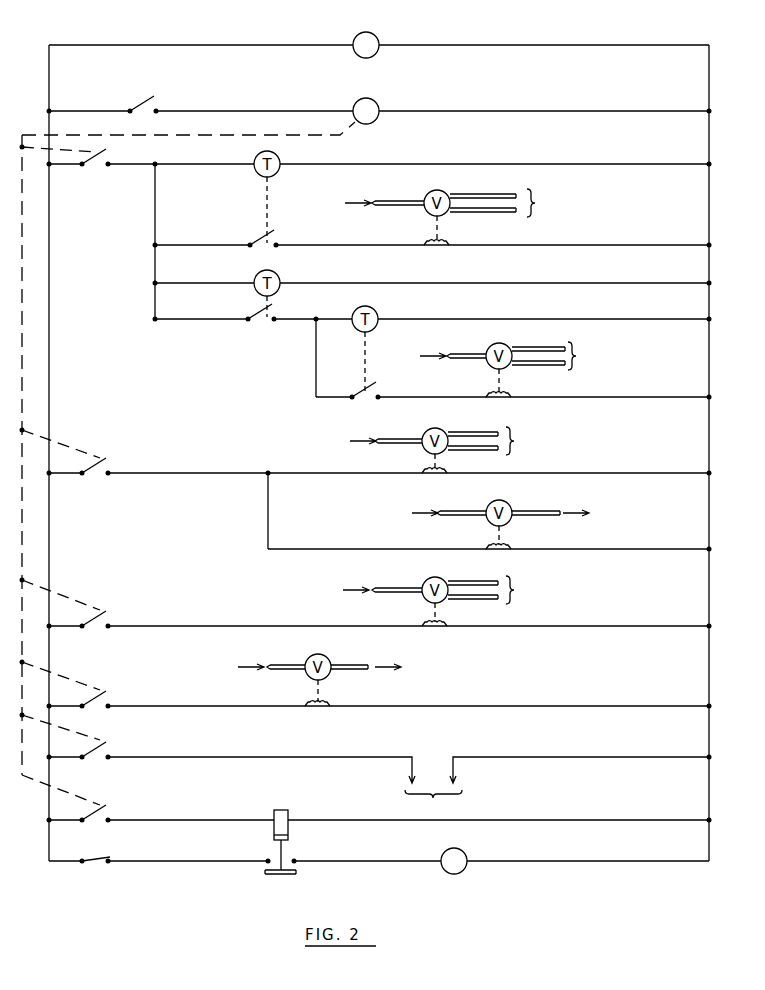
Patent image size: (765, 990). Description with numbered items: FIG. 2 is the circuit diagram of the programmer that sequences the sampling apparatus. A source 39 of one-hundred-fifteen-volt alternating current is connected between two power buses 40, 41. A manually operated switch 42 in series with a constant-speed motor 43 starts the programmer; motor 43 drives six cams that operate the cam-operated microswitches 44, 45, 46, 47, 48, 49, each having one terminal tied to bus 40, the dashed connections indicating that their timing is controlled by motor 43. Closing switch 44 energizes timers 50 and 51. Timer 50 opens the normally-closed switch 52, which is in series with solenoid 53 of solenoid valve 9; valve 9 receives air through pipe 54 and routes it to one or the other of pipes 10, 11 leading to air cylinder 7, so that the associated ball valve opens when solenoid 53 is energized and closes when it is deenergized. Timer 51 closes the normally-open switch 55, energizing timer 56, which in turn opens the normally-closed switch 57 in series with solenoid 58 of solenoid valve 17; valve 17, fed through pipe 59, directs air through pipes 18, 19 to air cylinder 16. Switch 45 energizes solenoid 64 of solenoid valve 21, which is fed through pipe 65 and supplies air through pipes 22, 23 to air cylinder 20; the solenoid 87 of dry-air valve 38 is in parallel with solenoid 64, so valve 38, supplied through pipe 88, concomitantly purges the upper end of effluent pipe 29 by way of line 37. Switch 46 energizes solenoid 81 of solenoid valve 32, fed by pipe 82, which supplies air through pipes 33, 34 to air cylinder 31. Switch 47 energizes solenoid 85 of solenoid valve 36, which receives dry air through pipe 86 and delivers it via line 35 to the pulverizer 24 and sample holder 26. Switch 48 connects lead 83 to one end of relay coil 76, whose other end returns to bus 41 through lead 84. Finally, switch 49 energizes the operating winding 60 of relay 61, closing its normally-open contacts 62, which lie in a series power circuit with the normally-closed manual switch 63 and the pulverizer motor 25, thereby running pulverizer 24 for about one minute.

The air cylinder 7 is at (597, 203).
The solenoid valve 9 is at (444, 191).
The pipe 10 is at (485, 192).
The pipe 11 is at (485, 214).
The air cylinder 16 is at (638, 356).
The solenoid valve 17 is at (490, 345).
The pipe 18 is at (523, 345).
The pipe 19 is at (523, 367).
The air cylinder 20 is at (577, 441).
The solenoid valve 21 is at (428, 429).
The pipe 22 is at (470, 430).
The pipe 23 is at (466, 452).
The pulverizer 24 is at (490, 663).
The pulverizer motor 25 is at (464, 870).
The sample holder 26 is at (479, 683).
The catalyst sample effluent pipe 29 is at (640, 513).
The air cylinder 31 is at (579, 590).
The solenoid valve 32 is at (432, 577).
The pipe 33 is at (470, 579).
The pipe 34 is at (466, 601).
The line 35 is at (345, 670).
The solenoid valve 36 is at (326, 656).
The line 37 is at (520, 509).
The solenoid valve 38 is at (476, 517).
The source of 115-volt A.C. power 39 is at (376, 54).
The power bus 40 is at (50, 82).
The power bus 41 is at (709, 78).
The manually-operated switch 42 is at (136, 98).
The motor 43 is at (358, 100).
The cam-operated switch 44 is at (92, 160).
The cam-operated switch 45 is at (92, 470).
The cam-operated switch 46 is at (92, 622).
The cam-operated switch 47 is at (92, 702).
The cam-operated switch 48 is at (92, 753).
The cam-operated switch 49 is at (92, 816).
The timer 50 is at (278, 158).
The timer 51 is at (258, 272).
The normally-closed switch 52 is at (262, 238).
The solenoid 53 is at (426, 240).
The pipe 54 is at (383, 200).
The normally-open switch 55 is at (262, 325).
The timer 56 is at (374, 308).
The normally-closed switch 57 is at (352, 386).
The solenoid 58 is at (506, 400).
The pipe 59 is at (466, 360).
The operating winding 60 is at (288, 822).
The relay 61 is at (263, 810).
The normally-open contacts 62 is at (278, 875).
The manually-operated switch 63 is at (90, 866).
The solenoid 64 is at (424, 469).
The pipe 65 is at (395, 438).
The relay coil 76 is at (425, 801).
The solenoid 81 is at (424, 622).
The pipe 82 is at (395, 587).
The lead 83 is at (256, 759).
The lead 84 is at (552, 759).
The solenoid 85 is at (324, 709).
The pipe 86 is at (285, 664).
The solenoid 87 is at (508, 546).
The pipe 88 is at (462, 509).